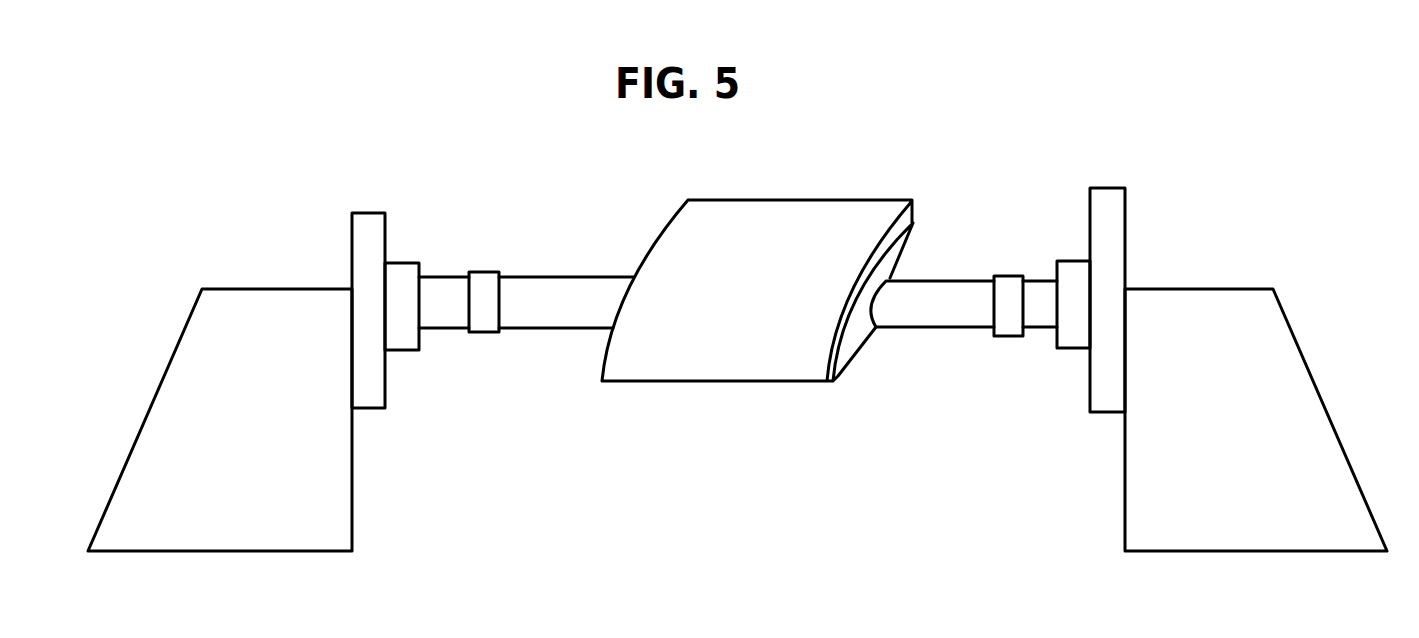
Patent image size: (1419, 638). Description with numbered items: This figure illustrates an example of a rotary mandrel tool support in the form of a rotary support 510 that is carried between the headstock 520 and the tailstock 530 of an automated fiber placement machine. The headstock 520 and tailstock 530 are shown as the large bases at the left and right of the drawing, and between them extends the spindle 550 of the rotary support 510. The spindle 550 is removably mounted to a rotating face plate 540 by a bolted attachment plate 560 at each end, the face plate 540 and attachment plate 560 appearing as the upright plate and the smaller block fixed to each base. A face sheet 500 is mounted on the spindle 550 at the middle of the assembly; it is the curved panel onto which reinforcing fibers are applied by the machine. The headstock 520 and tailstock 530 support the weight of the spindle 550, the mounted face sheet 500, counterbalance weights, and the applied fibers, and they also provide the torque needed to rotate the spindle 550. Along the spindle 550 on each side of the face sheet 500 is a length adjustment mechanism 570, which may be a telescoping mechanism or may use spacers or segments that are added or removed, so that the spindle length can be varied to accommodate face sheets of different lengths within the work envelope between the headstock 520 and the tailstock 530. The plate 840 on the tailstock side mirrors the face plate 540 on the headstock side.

The face sheet 500 is at (847, 200).
The rotary support 510 is at (1007, 113).
The headstock 520 is at (222, 289).
The tailstock 530 is at (1212, 289).
The rotating face plate 540 is at (367, 213).
The spindle 550 is at (940, 330).
The bolted attachment plate 560 is at (402, 263).
The length adjustment mechanism 570 is at (483, 332).
The right mounting plate 840 is at (1108, 188).